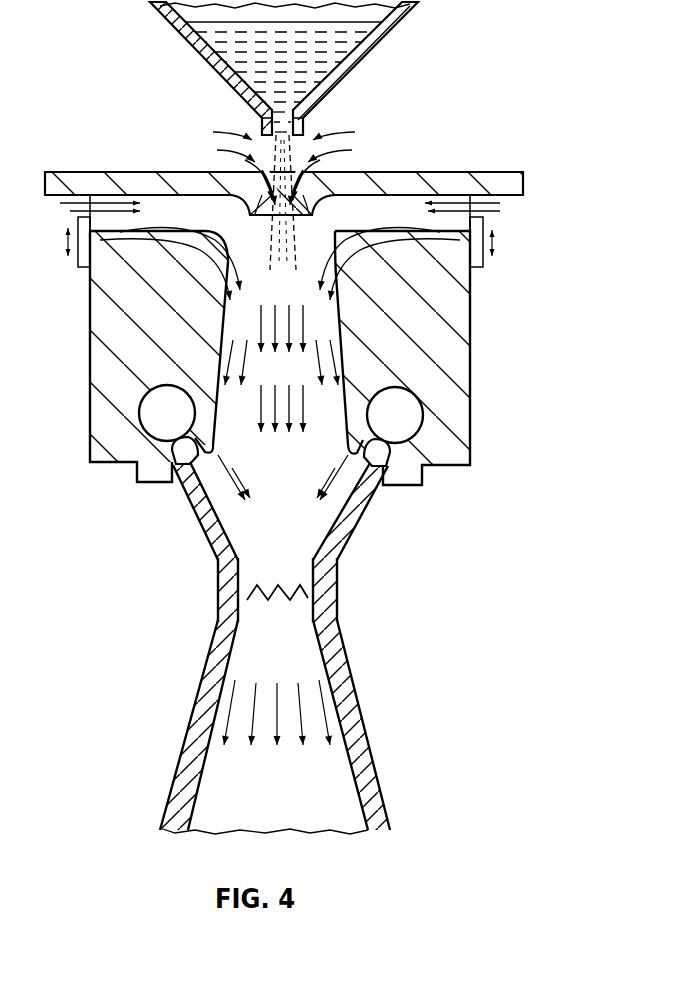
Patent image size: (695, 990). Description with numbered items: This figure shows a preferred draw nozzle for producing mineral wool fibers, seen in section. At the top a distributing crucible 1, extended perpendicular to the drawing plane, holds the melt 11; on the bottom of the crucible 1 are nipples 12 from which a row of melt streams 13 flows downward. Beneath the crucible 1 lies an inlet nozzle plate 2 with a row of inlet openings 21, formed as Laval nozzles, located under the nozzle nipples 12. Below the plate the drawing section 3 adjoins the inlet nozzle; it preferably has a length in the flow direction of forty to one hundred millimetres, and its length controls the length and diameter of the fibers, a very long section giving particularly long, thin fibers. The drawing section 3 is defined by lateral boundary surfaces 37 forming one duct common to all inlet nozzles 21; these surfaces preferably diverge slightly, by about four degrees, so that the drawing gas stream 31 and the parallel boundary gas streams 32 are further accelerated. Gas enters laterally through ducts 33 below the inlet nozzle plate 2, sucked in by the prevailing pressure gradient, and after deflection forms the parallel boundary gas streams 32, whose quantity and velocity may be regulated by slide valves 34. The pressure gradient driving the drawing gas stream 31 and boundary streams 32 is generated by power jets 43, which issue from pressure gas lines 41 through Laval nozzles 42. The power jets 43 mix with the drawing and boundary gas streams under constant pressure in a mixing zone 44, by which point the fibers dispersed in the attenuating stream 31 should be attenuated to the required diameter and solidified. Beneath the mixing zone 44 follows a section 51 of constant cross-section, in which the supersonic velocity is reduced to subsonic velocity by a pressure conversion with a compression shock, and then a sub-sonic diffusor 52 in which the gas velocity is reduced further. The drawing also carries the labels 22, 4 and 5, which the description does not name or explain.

The distributing crucible 1 is at (412, 22).
The melt 11 is at (350, 42).
The nipples 12 is at (302, 125).
The melt streams 13 is at (262, 126).
The inlet nozzle plate 2 is at (431, 170).
The inlet openings 21 is at (272, 198).
The gas flow into opening 22 is at (282, 165).
The drawing section 3 is at (472, 352).
The drawing gas stream 31 is at (282, 415).
The parallel boundary gas streams 32 is at (280, 364).
The ducts 33 is at (478, 209).
The slide valves 34 is at (478, 257).
The lateral boundary surfaces 37 is at (212, 362).
The sealing ring assembly 4 is at (155, 455).
The pressure gas lines 41 is at (155, 402).
The Laval nozzles 42 is at (185, 452).
The power jets 43 is at (210, 508).
The mixing zone 44 is at (276, 530).
The diverging nozzle 5 is at (355, 668).
The section of constant cross-section 51 is at (300, 602).
The sub-sonic diffusor 52 is at (300, 773).